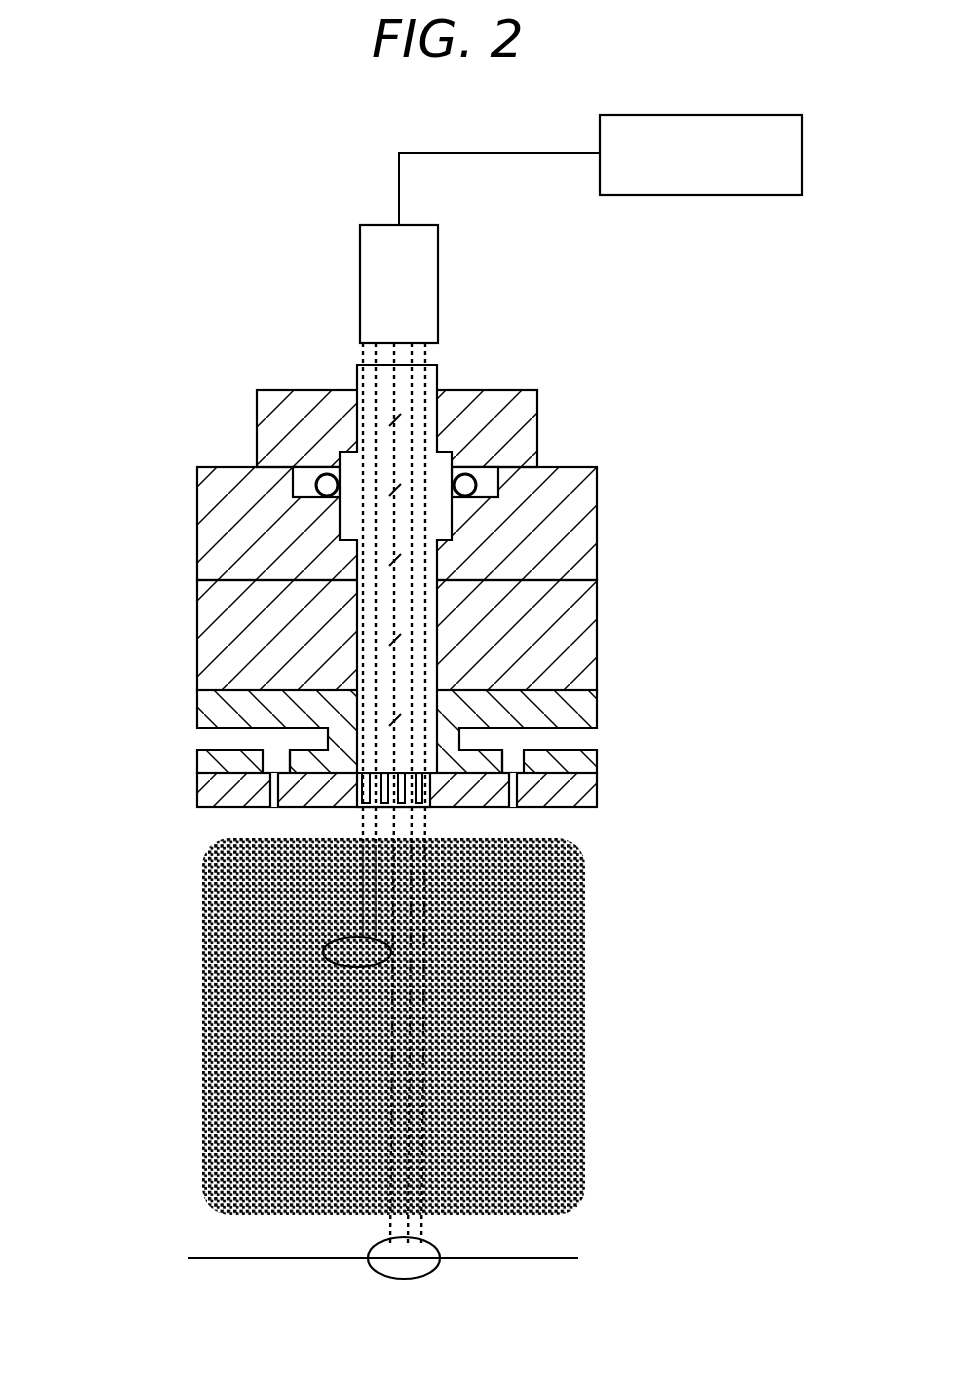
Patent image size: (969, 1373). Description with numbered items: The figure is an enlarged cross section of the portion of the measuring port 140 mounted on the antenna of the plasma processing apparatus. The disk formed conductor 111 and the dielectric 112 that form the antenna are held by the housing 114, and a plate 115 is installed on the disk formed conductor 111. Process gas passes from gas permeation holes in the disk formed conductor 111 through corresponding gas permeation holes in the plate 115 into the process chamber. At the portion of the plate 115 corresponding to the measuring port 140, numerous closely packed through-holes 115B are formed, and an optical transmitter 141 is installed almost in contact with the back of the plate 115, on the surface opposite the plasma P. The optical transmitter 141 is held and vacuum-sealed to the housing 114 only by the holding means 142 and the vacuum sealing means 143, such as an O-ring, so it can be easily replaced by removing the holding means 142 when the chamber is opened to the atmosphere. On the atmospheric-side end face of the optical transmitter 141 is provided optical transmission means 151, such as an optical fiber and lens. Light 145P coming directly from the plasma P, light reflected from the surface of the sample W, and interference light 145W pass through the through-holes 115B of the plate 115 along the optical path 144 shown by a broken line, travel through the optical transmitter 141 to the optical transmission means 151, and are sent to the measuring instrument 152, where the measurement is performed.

The measuring port 140 is at (210, 358).
The optical transmission means 151 is at (385, 277).
The measuring instrument 152 is at (727, 183).
The holding means 142 is at (467, 397).
The vacuum sealing means 143 is at (497, 458).
The housing 114 is at (233, 520).
The dielectric 112 is at (228, 607).
The disk formed conductor 111 is at (237, 690).
The plate 115 is at (207, 785).
The through-hole 115B is at (428, 808).
The optical transmitter 141 is at (397, 600).
The optical path 144 is at (352, 887).
The light 145P is at (343, 965).
The plasma P is at (542, 1000).
The interference light 145W is at (433, 1240).
The sample W is at (202, 1258).